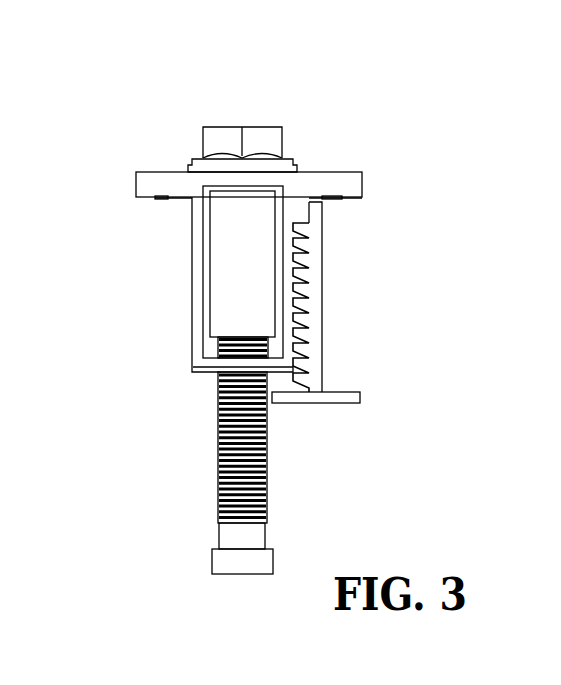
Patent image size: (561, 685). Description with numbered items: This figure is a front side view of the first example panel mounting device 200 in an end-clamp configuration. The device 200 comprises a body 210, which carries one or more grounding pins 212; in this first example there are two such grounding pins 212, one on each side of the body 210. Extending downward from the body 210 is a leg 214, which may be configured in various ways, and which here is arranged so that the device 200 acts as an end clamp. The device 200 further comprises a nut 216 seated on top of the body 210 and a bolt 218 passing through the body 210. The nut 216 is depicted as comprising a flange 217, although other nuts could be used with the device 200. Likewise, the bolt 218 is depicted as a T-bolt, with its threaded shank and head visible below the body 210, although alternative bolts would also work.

The panel mounting device 200 is at (356, 124).
The body 210 is at (155, 172).
The grounding pins 212 is at (166, 199).
The leg 214 is at (346, 391).
The nut 216 is at (212, 127).
The flange 217 is at (223, 299).
The bolt 218 is at (218, 548).